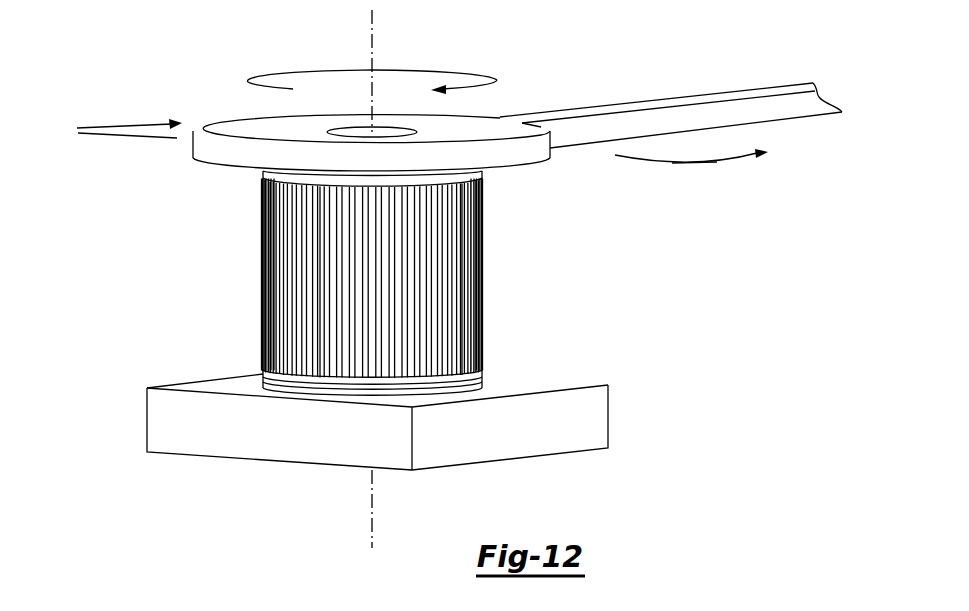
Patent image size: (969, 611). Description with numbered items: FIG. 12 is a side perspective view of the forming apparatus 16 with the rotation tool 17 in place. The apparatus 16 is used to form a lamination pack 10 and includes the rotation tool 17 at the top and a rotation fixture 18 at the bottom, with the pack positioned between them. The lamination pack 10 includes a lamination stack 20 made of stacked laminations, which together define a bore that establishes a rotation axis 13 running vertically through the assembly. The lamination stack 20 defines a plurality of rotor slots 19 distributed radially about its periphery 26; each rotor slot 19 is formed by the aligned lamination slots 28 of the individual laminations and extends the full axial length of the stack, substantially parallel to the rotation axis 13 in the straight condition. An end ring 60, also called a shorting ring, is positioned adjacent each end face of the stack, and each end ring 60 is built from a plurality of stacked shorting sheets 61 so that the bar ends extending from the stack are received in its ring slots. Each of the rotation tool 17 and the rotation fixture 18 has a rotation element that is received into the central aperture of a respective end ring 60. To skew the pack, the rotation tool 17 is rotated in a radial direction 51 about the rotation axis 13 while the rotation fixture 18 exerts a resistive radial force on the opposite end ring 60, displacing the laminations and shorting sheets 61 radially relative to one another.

The lamination pack 10 is at (196, 278).
The rotation axis 13 is at (373, 24).
The second apparatus 16 is at (163, 85).
The rotation tool 17 is at (640, 84).
The rotation fixture 18 is at (637, 424).
The rotor slot 19 is at (298, 337).
The lamination stack 20 is at (496, 255).
The periphery 26 is at (323, 268).
The lamination slot 28 is at (462, 315).
The radial direction 51 is at (326, 69).
The end ring 60 is at (504, 179).
The shorting sheet 61 is at (266, 176).